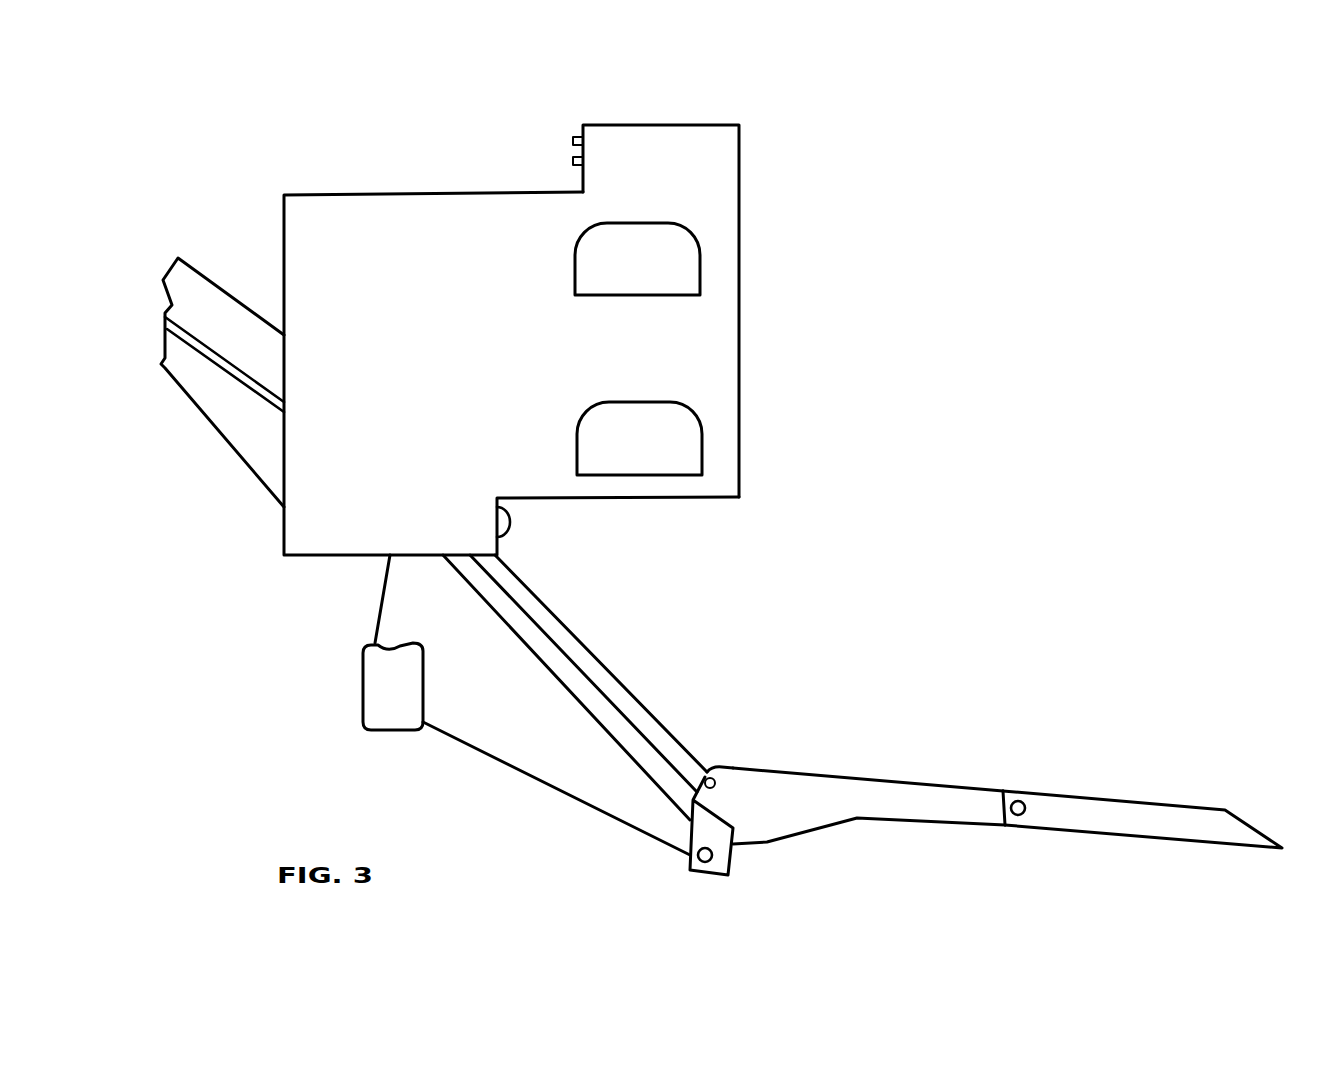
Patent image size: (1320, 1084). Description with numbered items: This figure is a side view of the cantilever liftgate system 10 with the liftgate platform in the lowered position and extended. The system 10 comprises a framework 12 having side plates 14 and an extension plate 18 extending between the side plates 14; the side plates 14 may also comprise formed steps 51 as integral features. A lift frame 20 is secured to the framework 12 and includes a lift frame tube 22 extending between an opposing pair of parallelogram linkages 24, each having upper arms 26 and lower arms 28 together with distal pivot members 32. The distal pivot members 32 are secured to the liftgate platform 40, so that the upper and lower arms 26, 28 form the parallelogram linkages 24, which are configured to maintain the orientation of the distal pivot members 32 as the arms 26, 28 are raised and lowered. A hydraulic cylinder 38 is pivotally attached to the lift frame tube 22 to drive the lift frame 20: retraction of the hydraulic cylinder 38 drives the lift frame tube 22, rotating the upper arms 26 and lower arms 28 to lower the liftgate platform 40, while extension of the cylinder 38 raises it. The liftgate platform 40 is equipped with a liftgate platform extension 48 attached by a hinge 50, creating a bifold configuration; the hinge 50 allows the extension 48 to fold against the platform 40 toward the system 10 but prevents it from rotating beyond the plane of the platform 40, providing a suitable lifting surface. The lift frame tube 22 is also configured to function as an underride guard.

The cantilever liftgate system 10 is at (898, 230).
The framework 12 is at (479, 176).
The side plates 14 is at (463, 370).
The extension plate 18 is at (668, 125).
The lift frame 20 is at (368, 625).
The lift frame tube 22 is at (393, 710).
The parallelogram linkages 24 is at (602, 831).
The upper arms 26 is at (605, 665).
The lower arms 28 is at (559, 739).
The distal pivot members 32 is at (733, 860).
The hydraulic cylinder 38 is at (222, 290).
The liftgate platform 40 is at (877, 795).
The liftgate platform extension 48 is at (1125, 815).
The hinge 50 is at (1022, 800).
The formed steps 51 is at (702, 440).